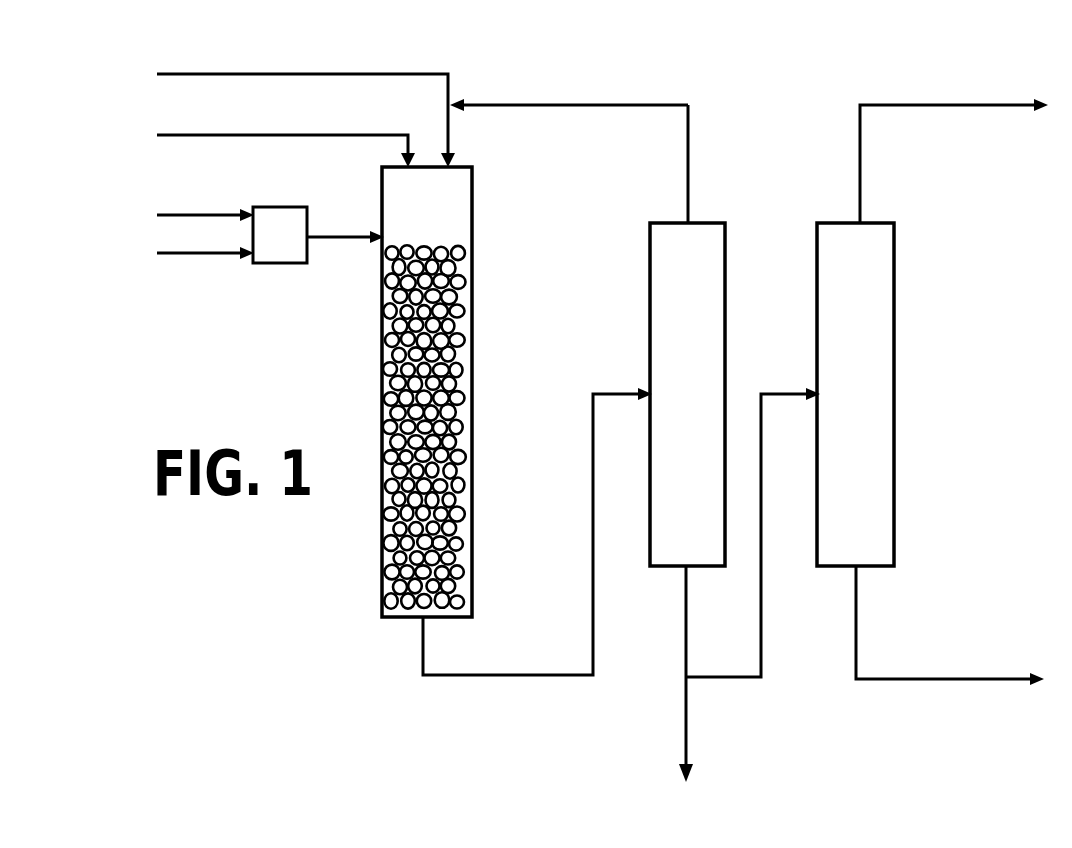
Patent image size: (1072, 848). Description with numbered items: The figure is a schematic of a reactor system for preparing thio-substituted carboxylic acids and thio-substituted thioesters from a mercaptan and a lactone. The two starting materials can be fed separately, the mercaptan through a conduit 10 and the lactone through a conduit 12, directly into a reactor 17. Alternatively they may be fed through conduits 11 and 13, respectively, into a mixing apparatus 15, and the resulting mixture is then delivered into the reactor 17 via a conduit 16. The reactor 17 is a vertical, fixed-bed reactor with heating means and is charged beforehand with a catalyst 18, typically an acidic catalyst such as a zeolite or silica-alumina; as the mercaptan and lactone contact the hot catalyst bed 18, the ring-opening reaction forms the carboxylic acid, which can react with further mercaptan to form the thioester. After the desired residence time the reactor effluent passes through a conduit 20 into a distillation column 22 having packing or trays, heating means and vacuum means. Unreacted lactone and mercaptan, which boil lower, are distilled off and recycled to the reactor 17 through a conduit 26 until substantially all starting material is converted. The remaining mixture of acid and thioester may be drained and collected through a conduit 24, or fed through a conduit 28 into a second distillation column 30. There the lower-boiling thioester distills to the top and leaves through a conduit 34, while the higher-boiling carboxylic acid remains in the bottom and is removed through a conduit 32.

The conduit 10 is at (304, 74).
The conduit 11 is at (197, 215).
The conduit 12 is at (292, 135).
The conduit 13 is at (200, 255).
The mixing apparatus 15 is at (262, 264).
The conduit 16 is at (330, 238).
The reactor 17 is at (382, 376).
The catalyst 18 is at (422, 460).
The conduit 20 is at (528, 676).
The distillation column 22 is at (650, 318).
The conduit 24 is at (686, 639).
The conduit 26 is at (639, 104).
The conduit 28 is at (762, 639).
The distillation column 30 is at (894, 318).
The conduit 32 is at (856, 626).
The conduit 34 is at (860, 188).